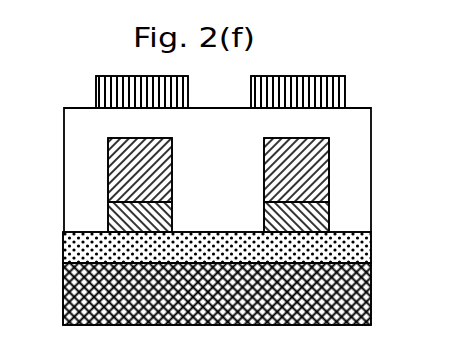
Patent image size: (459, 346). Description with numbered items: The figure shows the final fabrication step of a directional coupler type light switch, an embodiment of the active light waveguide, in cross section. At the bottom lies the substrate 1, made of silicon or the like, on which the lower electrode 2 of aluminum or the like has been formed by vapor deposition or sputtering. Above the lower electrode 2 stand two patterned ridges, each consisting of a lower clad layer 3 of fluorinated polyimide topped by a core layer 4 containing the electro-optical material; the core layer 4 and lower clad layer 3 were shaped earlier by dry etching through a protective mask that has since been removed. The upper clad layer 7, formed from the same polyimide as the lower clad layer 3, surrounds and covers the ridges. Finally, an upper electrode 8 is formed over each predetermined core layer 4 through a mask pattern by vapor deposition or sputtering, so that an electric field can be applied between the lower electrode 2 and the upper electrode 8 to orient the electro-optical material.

The substrate 1 is at (329, 296).
The lower electrode 2 is at (88, 245).
The lower clad layer 3 is at (305, 216).
The core layer 4 is at (125, 178).
The upper clad layer 7 is at (349, 143).
The upper electrode 8 is at (118, 93).